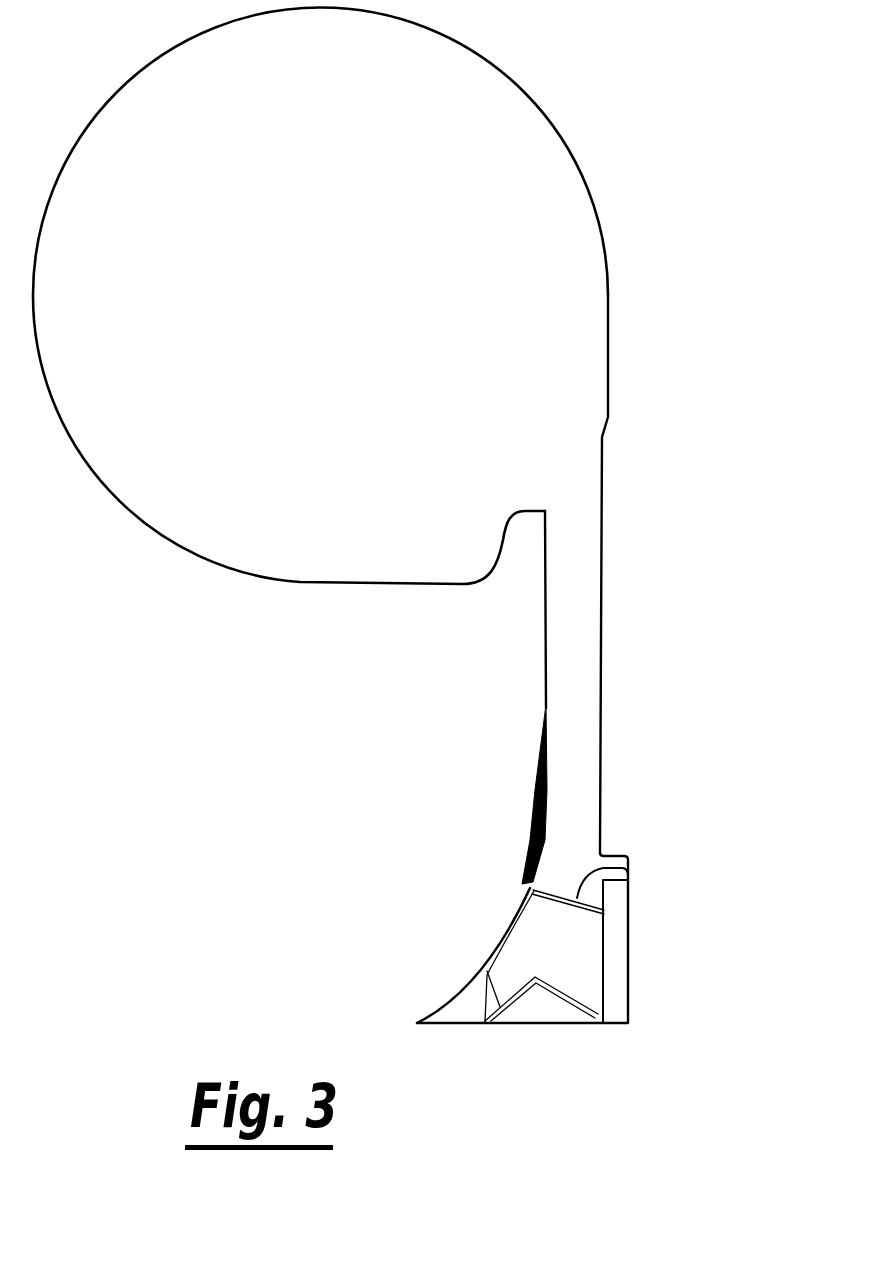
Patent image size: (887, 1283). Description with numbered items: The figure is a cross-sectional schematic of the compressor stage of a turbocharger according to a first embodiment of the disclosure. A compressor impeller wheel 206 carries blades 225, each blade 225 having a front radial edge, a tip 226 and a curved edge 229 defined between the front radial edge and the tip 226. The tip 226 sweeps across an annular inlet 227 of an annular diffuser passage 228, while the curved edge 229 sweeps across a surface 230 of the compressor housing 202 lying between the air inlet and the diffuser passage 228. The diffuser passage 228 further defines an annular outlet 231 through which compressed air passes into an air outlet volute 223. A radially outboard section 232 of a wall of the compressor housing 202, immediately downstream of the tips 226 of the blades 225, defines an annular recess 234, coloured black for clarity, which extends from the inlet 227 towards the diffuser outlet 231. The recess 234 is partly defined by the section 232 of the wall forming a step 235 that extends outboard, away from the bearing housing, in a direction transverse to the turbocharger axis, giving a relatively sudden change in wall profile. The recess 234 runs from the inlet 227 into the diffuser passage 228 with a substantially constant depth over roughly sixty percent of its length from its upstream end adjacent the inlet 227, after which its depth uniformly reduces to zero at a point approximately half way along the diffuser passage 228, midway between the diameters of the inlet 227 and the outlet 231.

The air outlet volute 223 is at (320, 295).
The compressor housing 202 is at (463, 609).
The annular outlet 231 is at (583, 498).
The annular diffuser passage 228 is at (577, 675).
The blade 225 is at (580, 977).
The tip 226 is at (627, 868).
The annular inlet 227 is at (568, 880).
The surface 230 is at (500, 943).
The annular recess 234 is at (537, 805).
The radially outboard section 232 is at (506, 855).
The step 235 is at (530, 884).
The curved edge 229 is at (500, 965).
The compressor impeller wheel 206 is at (592, 1055).